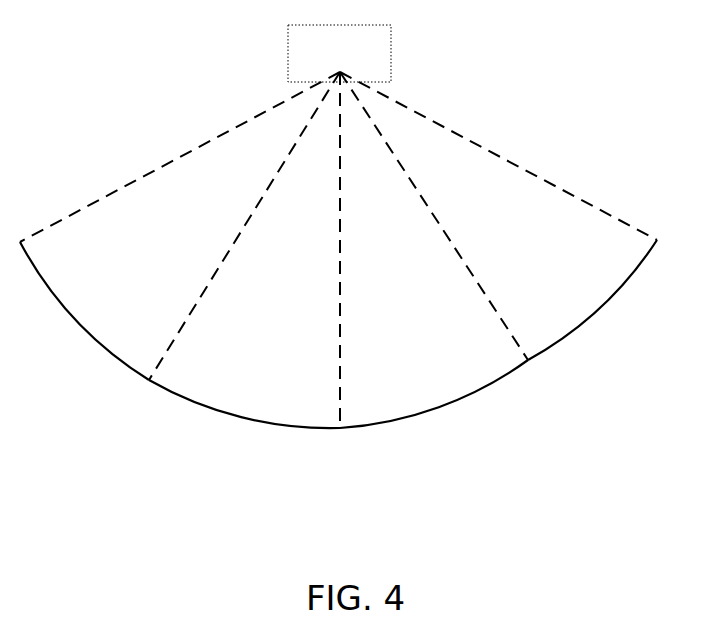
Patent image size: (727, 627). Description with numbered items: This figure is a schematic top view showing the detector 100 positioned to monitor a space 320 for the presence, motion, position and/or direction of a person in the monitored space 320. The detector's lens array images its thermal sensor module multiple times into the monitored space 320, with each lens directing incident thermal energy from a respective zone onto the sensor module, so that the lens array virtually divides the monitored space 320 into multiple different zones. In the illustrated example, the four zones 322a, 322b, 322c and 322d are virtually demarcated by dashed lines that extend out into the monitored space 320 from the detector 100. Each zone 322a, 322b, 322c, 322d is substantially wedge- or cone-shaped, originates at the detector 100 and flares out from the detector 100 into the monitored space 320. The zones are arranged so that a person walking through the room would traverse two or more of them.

The detector 100 is at (362, 59).
The monitored space 320 is at (108, 114).
The zone 322a is at (182, 243).
The zone 322b is at (312, 318).
The zone 322c is at (430, 301).
The zone 322d is at (542, 231).